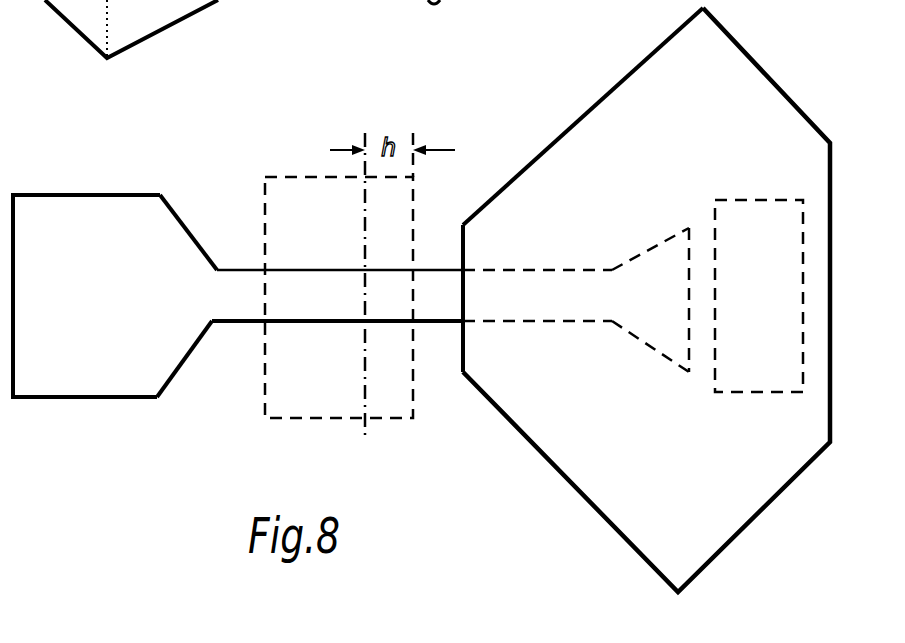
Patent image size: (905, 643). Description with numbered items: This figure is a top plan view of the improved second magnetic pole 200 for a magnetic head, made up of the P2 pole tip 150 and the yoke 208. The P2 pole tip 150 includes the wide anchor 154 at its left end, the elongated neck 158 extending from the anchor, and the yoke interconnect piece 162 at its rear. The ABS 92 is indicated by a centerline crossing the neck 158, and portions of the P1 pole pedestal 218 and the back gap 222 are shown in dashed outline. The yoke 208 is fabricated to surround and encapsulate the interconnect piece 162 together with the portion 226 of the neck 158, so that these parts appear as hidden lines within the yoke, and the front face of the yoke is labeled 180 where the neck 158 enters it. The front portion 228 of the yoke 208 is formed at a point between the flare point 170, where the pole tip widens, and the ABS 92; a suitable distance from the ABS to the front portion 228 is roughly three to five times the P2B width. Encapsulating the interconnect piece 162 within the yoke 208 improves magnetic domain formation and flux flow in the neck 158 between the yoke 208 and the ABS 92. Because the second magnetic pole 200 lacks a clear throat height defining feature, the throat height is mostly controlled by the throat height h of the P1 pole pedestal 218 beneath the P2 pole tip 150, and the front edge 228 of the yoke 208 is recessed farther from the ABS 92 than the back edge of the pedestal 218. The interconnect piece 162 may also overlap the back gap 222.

The ABS 92 is at (362, 444).
The P2 pole tip 150 is at (351, 278).
The anchor 154 is at (128, 294).
The elongated neck 158 is at (315, 283).
The yoke interconnect piece 162 is at (655, 268).
The flare point 170 is at (217, 269).
The end face of head 180 is at (463, 290).
The second magnetic pole 200 is at (625, 300).
The yoke 208 is at (613, 106).
The P1 pole pedestal 218 is at (298, 192).
The back gap 222 is at (786, 270).
The portion of the neck 226 is at (497, 288).
The front portion of the yoke 228 is at (463, 350).